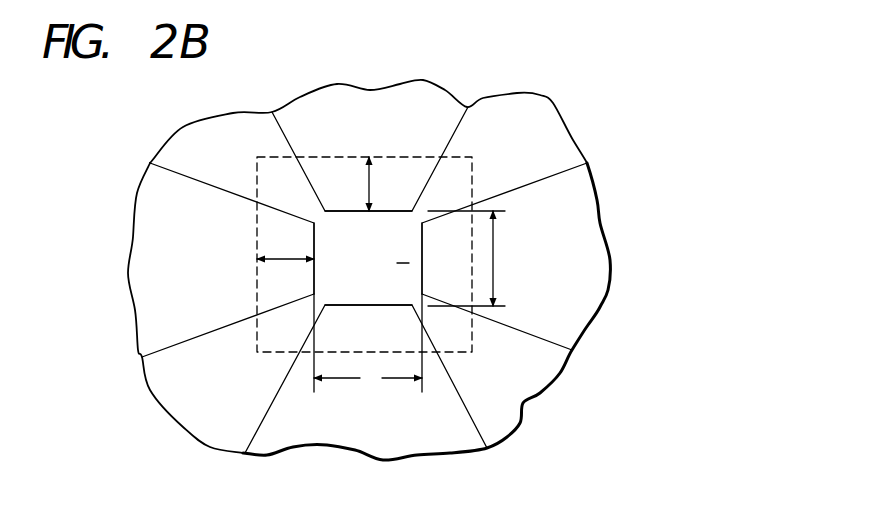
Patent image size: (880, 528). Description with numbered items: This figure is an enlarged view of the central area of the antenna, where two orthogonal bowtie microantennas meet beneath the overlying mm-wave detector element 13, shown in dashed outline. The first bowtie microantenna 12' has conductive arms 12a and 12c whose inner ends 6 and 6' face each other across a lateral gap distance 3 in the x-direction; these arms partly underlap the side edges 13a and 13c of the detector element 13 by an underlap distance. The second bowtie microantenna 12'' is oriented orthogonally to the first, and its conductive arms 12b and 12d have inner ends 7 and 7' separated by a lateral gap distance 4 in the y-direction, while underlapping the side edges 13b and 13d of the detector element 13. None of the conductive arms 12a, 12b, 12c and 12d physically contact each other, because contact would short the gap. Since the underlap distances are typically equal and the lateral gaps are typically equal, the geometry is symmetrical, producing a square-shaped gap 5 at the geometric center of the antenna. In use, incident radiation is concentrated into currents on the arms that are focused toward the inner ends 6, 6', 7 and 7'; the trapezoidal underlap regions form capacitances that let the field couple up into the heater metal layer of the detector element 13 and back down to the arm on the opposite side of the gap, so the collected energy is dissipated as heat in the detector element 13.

The first bowtie microantenna 12' is at (359, 311).
The second bowtie microantenna 12'' is at (368, 266).
The mm-wave detector element 13 is at (455, 167).
The side edge of detector element 13a is at (255, 248).
The side edge of detector element 13b is at (347, 157).
The side edge of detector element 13c is at (473, 177).
The side edge of detector element 13d is at (325, 352).
The conductive arm 12a is at (156, 268).
The conductive arm 12b is at (321, 103).
The conductive arm 12c is at (580, 250).
The conductive arm 12d is at (427, 437).
The inner end 6 is at (329, 258).
The inner end 6' is at (402, 265).
The inner end 7 is at (368, 224).
The inner end 7' is at (368, 284).
The lateral gap distance 3 is at (368, 343).
The lateral gap distance 4 is at (473, 258).
The square-shaped gap 5 is at (403, 251).